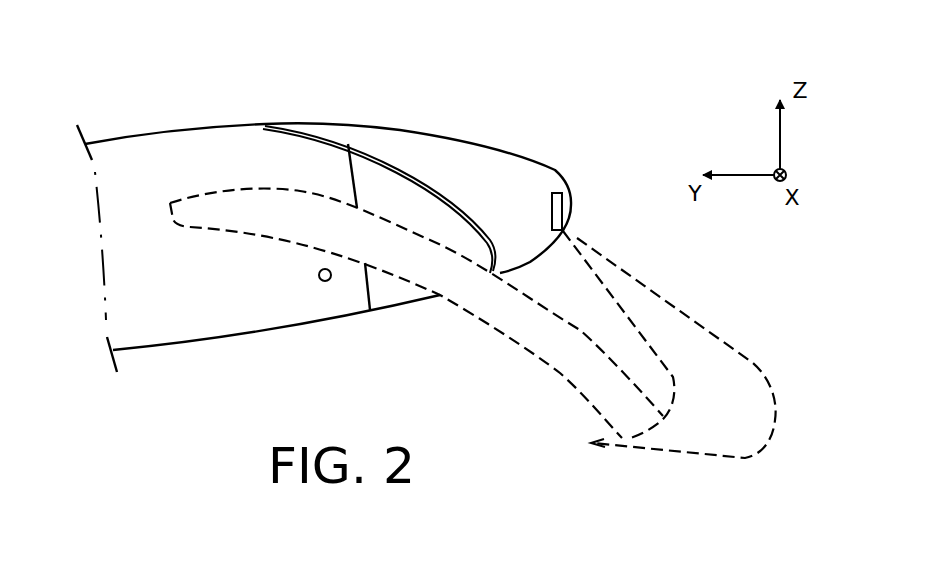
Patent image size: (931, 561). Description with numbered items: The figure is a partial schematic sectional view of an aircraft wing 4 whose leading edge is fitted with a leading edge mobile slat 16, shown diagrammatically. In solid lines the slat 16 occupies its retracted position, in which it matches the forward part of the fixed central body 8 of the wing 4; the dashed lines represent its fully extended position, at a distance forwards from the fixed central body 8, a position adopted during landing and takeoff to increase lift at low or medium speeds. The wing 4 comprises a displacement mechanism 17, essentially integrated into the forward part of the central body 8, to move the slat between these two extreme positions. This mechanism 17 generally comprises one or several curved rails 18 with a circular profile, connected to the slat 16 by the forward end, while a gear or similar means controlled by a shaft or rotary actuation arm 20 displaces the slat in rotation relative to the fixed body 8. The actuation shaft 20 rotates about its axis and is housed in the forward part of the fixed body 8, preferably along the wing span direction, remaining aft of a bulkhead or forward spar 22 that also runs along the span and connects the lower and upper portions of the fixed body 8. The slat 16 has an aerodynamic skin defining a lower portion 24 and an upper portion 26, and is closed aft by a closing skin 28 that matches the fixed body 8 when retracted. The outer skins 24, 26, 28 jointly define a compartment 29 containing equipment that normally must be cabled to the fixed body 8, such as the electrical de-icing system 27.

The wing 4 is at (300, 92).
The fixed central body 8 is at (155, 148).
The leading edge mobile slat 16 is at (536, 266).
The displacement mechanism 17 is at (468, 313).
The curved rail 18 is at (547, 347).
The rotary actuation arm 20 is at (318, 275).
The forward spar 22 is at (352, 160).
The lower portion 24 is at (530, 261).
The upper portion 26 is at (437, 132).
The electrical de-icing system 27 is at (557, 212).
The closing skin 28 is at (440, 190).
The compartment 29 is at (482, 180).